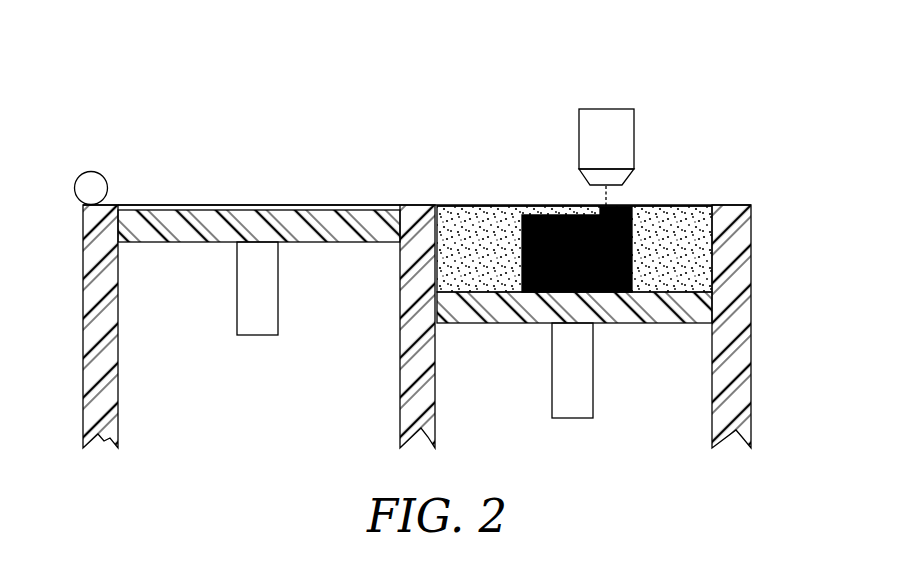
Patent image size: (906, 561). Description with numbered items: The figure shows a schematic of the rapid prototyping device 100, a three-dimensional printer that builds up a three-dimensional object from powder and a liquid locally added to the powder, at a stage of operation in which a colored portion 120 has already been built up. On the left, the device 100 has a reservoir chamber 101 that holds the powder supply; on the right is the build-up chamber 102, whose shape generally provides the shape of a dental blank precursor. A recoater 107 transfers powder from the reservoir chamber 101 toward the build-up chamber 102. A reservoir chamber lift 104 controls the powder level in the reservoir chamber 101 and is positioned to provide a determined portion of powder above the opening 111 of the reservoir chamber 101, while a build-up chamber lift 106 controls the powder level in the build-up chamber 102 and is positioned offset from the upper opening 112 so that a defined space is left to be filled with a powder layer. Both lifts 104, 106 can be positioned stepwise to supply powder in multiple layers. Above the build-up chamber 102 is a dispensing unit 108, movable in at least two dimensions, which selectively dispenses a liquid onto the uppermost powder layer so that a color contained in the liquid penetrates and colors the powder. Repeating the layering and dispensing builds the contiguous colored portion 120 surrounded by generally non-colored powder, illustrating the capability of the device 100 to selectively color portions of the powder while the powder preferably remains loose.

The rapid prototyping device 100 is at (116, 59).
The reservoir chamber 101 is at (172, 196).
The build-up chamber 102 is at (505, 186).
The reservoir chamber lift 104 is at (352, 230).
The build-up chamber lift 106 is at (652, 312).
The recoater 107 is at (90, 186).
The dispensing unit 108 is at (621, 137).
The opening of the reservoir chamber 111 is at (393, 207).
The upper opening of the build-up chamber 112 is at (445, 207).
The colored portion 120 is at (552, 213).